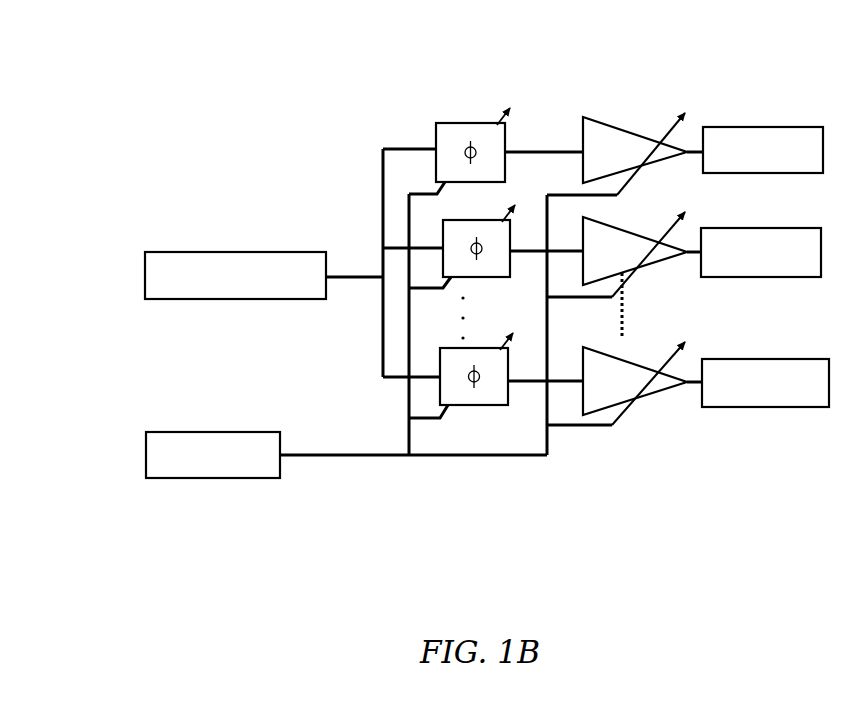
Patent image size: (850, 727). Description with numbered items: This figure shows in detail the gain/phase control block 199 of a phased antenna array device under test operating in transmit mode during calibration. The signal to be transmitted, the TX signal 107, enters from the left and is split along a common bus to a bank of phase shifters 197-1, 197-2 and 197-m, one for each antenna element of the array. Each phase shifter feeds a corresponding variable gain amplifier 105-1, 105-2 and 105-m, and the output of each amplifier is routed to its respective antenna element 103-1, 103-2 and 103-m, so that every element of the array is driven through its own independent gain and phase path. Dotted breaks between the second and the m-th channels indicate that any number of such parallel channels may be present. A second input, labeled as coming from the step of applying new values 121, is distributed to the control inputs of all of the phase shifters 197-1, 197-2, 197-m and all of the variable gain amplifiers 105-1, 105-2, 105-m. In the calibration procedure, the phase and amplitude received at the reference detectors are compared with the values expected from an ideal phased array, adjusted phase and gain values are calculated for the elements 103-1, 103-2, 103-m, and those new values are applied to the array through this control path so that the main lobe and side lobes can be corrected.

The gain/phase control block 199 is at (117, 98).
The signal to be transmitted 107 is at (235, 275).
The step of applying new values to the array 121 is at (213, 455).
The phase shifter 197-1 is at (455, 123).
The phase shifter 197-2 is at (455, 278).
The phase shifter 197-m is at (455, 405).
The variable gain amplifier 105-1 is at (653, 165).
The variable gain amplifier 105-2 is at (668, 255).
The variable gain amplifier 105-m is at (657, 392).
The antenna element 103-1 is at (763, 150).
The antenna element 103-2 is at (761, 252).
The antenna element 103-m is at (765, 383).